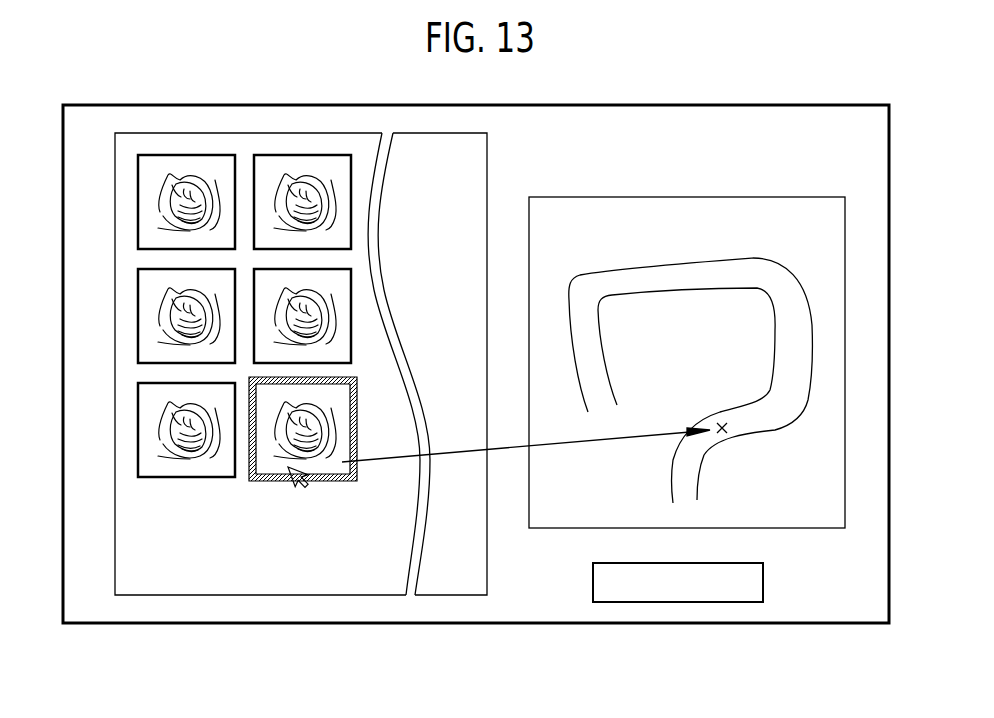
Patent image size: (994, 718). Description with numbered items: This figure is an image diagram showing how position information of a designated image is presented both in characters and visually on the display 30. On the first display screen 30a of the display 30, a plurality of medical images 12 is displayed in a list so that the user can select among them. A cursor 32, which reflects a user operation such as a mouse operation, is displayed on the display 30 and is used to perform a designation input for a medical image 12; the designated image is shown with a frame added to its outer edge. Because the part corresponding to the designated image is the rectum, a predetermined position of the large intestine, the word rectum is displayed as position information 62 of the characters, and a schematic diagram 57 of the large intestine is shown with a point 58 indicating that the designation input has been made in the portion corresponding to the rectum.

The display 30 is at (87, 625).
The first display screen 30a is at (347, 133).
The medical image 12 is at (270, 465).
The cursor 32 is at (317, 481).
The schematic diagram 57 is at (687, 197).
The point 58 is at (720, 422).
The position information 62 is at (763, 583).